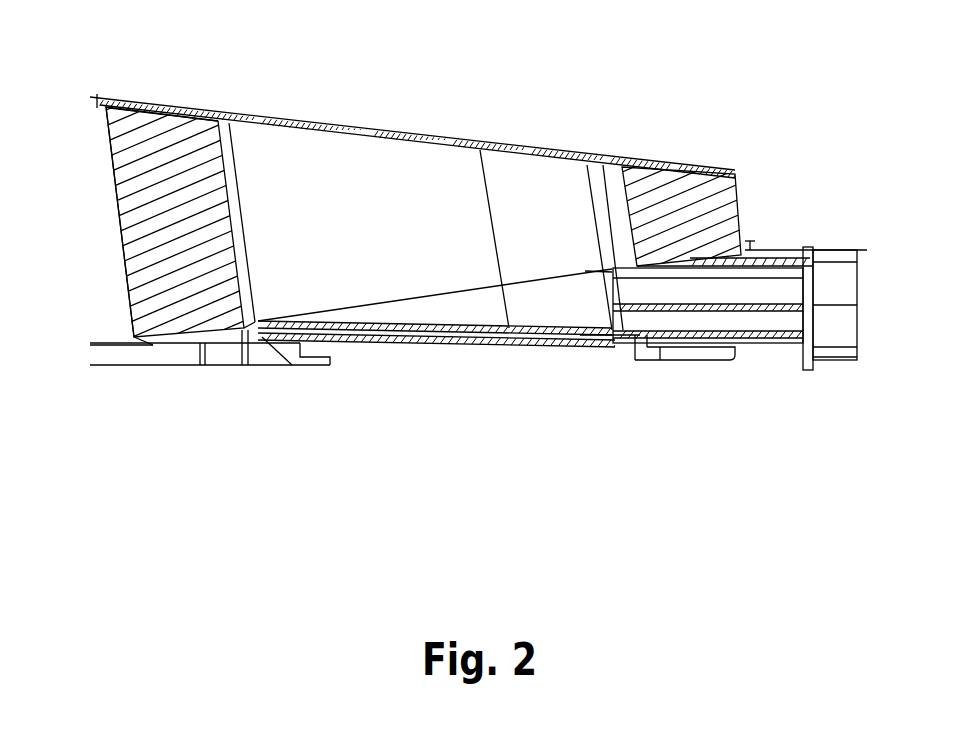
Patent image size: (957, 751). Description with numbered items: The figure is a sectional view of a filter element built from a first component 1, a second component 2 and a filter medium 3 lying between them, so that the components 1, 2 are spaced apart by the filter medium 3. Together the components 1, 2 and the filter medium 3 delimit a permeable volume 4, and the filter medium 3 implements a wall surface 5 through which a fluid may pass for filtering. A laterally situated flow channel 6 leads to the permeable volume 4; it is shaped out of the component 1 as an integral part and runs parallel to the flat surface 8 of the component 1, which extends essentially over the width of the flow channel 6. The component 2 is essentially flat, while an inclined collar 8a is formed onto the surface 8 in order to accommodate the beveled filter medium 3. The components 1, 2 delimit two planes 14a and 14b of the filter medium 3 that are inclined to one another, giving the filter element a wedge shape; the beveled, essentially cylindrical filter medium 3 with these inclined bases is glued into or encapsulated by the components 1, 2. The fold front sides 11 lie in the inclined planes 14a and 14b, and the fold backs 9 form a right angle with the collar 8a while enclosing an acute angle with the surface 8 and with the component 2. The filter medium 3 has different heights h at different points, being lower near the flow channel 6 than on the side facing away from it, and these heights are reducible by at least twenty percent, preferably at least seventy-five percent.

The first component 1 is at (520, 342).
The second component 2 is at (436, 128).
The filter medium 3 is at (128, 190).
The permeable volume 4 is at (350, 173).
The wall surface 5 is at (127, 252).
The flow channel 6 is at (840, 283).
The surface 8 is at (437, 330).
The collar 8a is at (150, 344).
The fold backs 9 is at (113, 141).
The fold front sides 11 is at (150, 100).
The plane 14a is at (552, 280).
The plane 14b is at (512, 152).
The height h is at (235, 160).